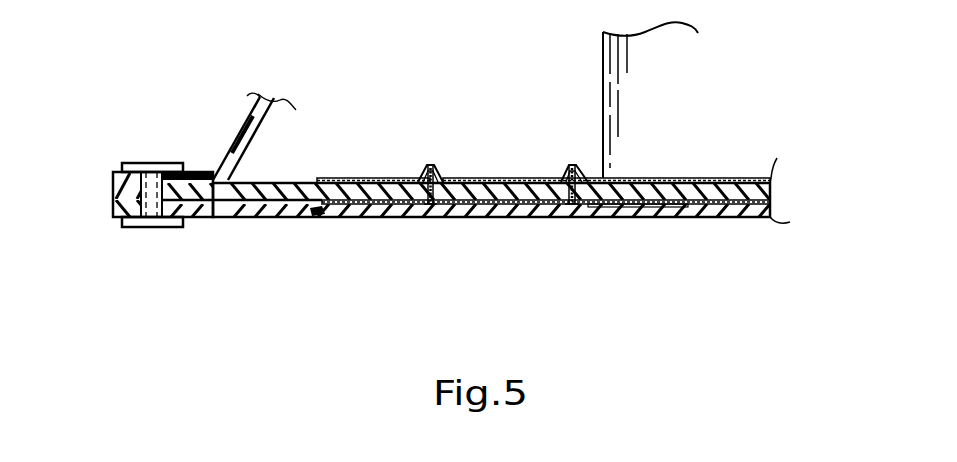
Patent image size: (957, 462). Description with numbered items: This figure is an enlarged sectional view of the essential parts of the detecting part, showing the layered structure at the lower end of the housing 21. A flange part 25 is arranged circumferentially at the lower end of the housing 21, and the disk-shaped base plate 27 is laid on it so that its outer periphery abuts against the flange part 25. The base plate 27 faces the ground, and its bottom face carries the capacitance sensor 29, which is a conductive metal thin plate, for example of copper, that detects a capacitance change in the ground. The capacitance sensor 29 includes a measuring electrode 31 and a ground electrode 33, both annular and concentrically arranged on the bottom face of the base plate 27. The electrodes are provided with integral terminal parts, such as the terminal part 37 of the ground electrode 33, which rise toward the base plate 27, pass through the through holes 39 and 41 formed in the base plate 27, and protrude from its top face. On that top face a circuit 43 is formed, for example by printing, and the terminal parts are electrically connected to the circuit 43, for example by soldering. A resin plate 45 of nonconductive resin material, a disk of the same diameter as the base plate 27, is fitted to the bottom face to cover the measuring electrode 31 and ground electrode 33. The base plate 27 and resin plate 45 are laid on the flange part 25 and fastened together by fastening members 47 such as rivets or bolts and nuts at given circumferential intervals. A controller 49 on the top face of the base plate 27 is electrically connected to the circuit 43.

The housing 21 is at (250, 122).
The flange part 25 is at (113, 178).
The base plate 27 is at (778, 184).
The capacitance sensor 29 is at (310, 218).
The measuring electrode 31 is at (378, 218).
The ground electrode 33 is at (640, 210).
The terminal part 37 is at (573, 164).
The through hole 39 is at (444, 176).
The through hole 41 is at (546, 177).
The circuit 43 is at (352, 177).
The resin plate 45 is at (511, 218).
The fastening member 47 is at (152, 162).
The controller 49 is at (601, 60).